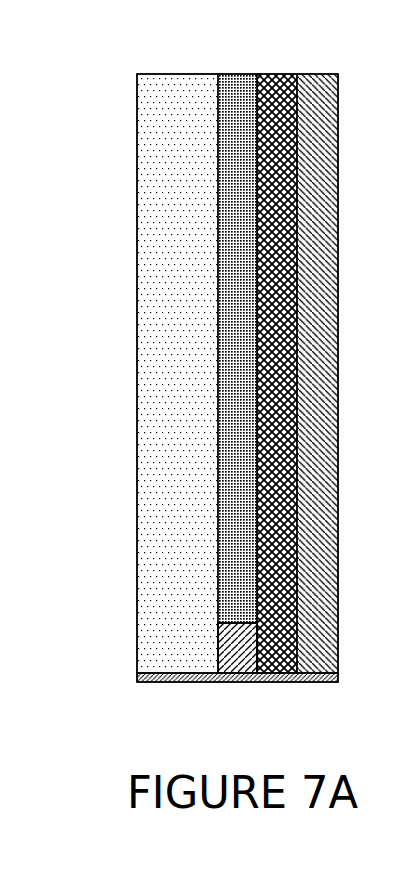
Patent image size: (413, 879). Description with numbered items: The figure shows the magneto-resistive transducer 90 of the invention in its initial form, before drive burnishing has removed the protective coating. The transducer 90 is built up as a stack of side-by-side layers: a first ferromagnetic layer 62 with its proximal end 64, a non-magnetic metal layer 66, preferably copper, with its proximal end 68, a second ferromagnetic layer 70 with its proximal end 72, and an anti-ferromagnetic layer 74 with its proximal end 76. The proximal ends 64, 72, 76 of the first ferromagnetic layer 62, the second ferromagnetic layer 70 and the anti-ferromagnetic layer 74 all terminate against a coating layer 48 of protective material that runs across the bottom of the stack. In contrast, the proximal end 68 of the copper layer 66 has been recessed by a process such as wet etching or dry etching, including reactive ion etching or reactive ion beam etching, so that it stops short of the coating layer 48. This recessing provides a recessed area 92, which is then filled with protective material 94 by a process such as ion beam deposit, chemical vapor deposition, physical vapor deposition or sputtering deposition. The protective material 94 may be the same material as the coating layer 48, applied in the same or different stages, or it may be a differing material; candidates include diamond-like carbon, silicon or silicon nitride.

The coating layer 48 is at (157, 680).
The first ferromagnetic layer 62 is at (192, 133).
The proximal end 64 is at (193, 672).
The non-magnetic metal layer 66 is at (239, 132).
The proximal end 68 is at (242, 620).
The second ferromagnetic layer 70 is at (273, 127).
The proximal end 72 is at (282, 667).
The anti-ferromagnetic layer 74 is at (312, 125).
The proximal end 76 is at (320, 667).
The transducer 90 is at (345, 260).
The recessed area 92 is at (240, 655).
The protective material 94 is at (237, 648).